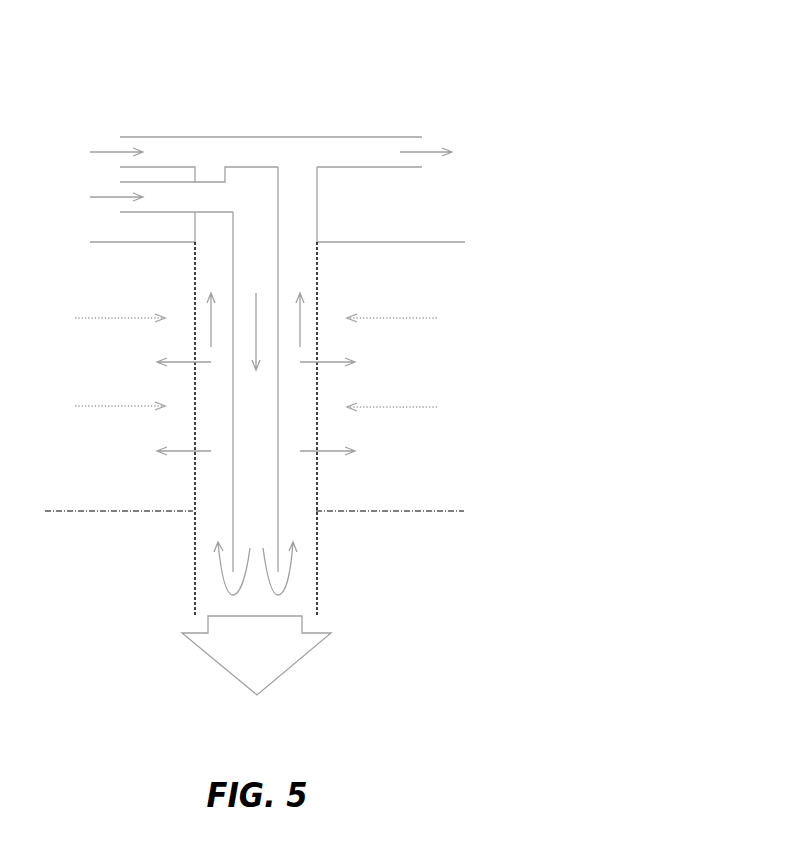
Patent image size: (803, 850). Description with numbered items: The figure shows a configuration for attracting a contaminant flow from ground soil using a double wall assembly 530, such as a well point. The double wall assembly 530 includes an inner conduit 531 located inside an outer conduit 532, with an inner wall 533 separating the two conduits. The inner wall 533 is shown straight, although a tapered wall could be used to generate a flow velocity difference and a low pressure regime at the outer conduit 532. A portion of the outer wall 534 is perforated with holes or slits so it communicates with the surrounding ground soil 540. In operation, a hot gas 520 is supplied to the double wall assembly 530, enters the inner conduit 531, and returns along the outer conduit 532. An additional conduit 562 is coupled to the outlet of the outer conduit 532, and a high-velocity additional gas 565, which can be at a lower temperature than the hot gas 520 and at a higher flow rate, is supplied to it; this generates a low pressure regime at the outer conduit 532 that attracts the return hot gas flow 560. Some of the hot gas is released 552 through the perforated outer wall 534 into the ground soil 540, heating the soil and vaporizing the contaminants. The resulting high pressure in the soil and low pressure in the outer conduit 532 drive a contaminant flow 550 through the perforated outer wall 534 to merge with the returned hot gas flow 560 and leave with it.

The hot gas 520 is at (115, 196).
The additional gas flow 565 is at (118, 152).
The additional conduit 562 is at (247, 152).
The return hot gas flow 560 is at (430, 148).
The inner conduit 531 is at (255, 233).
The ground soil 540 is at (452, 242).
The contaminant flow 550 is at (120, 318).
The inner wall 533 is at (280, 429).
The outer conduit 532 is at (218, 473).
The release of hot gas 552 is at (332, 455).
The double wall assembly 530 is at (158, 547).
The outer wall 534 is at (195, 583).